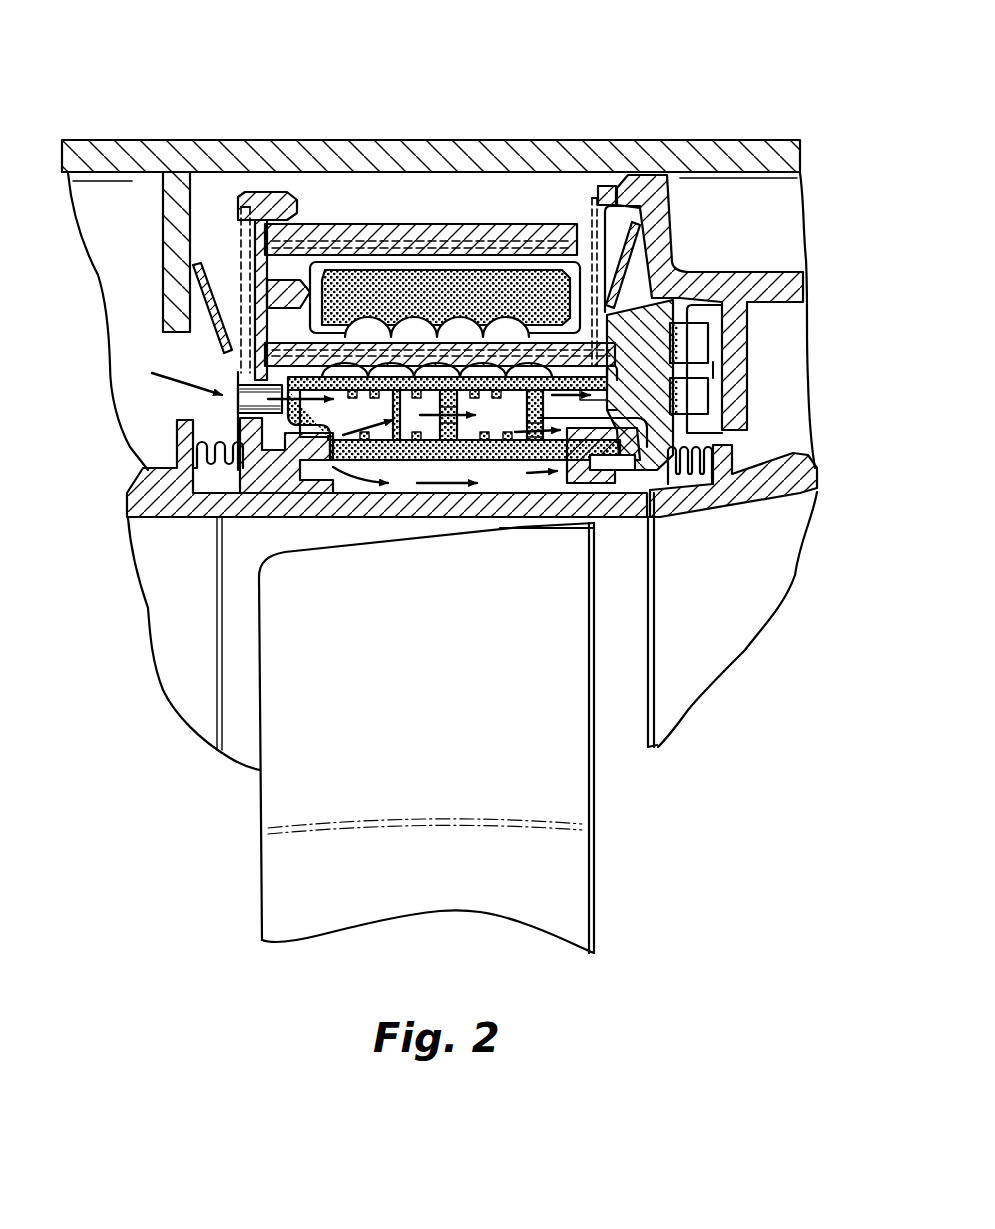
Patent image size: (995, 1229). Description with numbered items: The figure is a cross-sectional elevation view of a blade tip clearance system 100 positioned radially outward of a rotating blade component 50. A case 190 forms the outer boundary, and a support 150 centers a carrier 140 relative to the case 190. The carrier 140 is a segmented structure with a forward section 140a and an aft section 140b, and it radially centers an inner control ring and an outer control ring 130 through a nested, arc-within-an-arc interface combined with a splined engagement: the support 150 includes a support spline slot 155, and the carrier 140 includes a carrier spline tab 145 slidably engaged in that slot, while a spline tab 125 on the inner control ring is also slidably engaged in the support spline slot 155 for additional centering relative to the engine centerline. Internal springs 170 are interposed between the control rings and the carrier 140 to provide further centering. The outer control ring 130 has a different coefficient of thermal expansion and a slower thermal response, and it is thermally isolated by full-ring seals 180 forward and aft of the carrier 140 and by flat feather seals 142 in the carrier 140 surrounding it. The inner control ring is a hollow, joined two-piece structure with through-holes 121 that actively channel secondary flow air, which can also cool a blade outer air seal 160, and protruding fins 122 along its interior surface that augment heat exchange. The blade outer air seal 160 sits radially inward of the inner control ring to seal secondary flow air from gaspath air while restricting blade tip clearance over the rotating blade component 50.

The blade tip clearance system 100 is at (165, 85).
The case 190 is at (117, 158).
The support 150 is at (662, 216).
The carrier spline tab 145 is at (698, 342).
The support spline slot 155 is at (713, 367).
The spline tab 125 is at (700, 395).
The blade outer air seal 160 is at (247, 503).
The rotating blade component 50 is at (276, 880).
The flat feather seals 142 is at (241, 233).
The forward section 140a is at (272, 200).
The carrier 140 is at (446, 240).
The aft section 140b is at (508, 240).
The outer control ring 130 is at (355, 290).
The internal springs 170 is at (510, 372).
The full-ring seals 180 is at (214, 292).
The protruding fins 122 is at (397, 388).
The through-holes 121 is at (228, 388).